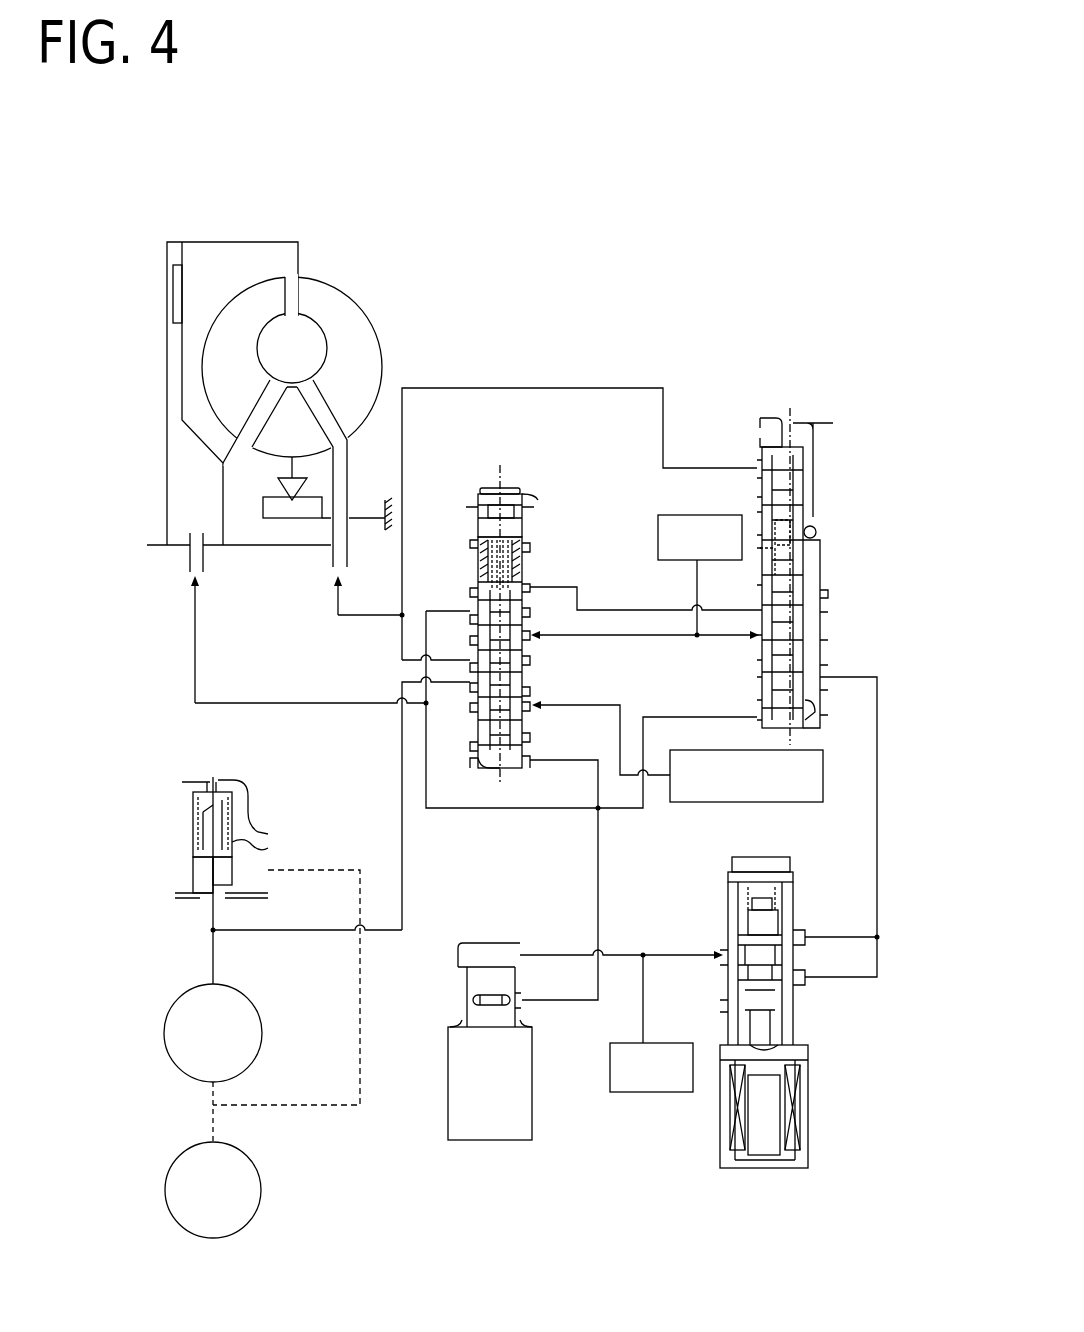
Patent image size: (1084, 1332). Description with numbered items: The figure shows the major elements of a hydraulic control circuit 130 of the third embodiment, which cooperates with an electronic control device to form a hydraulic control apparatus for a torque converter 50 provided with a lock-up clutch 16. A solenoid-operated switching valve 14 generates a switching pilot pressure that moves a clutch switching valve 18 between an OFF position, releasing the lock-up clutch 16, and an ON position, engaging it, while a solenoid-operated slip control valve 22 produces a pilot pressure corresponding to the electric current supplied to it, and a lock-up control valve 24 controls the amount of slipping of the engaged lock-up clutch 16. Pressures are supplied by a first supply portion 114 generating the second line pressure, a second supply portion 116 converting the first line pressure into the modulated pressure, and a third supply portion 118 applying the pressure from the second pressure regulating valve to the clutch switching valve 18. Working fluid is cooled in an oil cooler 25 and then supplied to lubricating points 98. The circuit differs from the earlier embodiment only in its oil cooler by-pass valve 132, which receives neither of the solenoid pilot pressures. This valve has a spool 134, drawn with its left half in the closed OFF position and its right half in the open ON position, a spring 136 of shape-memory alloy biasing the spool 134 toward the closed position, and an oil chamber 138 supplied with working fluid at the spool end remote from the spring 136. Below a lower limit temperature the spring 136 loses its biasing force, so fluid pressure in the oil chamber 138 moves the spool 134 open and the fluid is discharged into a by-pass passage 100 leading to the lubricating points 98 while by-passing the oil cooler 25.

The hydraulic control circuit 130 is at (505, 186).
The lock-up clutch 16 is at (145, 302).
The torque converter 50 is at (391, 292).
The clutch switching valve 18 is at (501, 445).
The lock-up control valve 24 is at (795, 375).
The first supply portion 114 is at (712, 522).
The third supply portion 118 is at (722, 790).
The second supply portion 116 is at (661, 1050).
The solenoid-operated switching valve 14 is at (550, 1113).
The solenoid-operated slip control valve 22 is at (831, 1054).
The oil cooler by-pass valve 132 is at (288, 826).
The spool 134 is at (197, 877).
The spring 136 is at (195, 820).
The oil chamber 138 is at (258, 878).
The by-pass passage 100 is at (360, 1005).
The oil cooler 25 is at (245, 1060).
The lubricating points 98 is at (235, 1218).